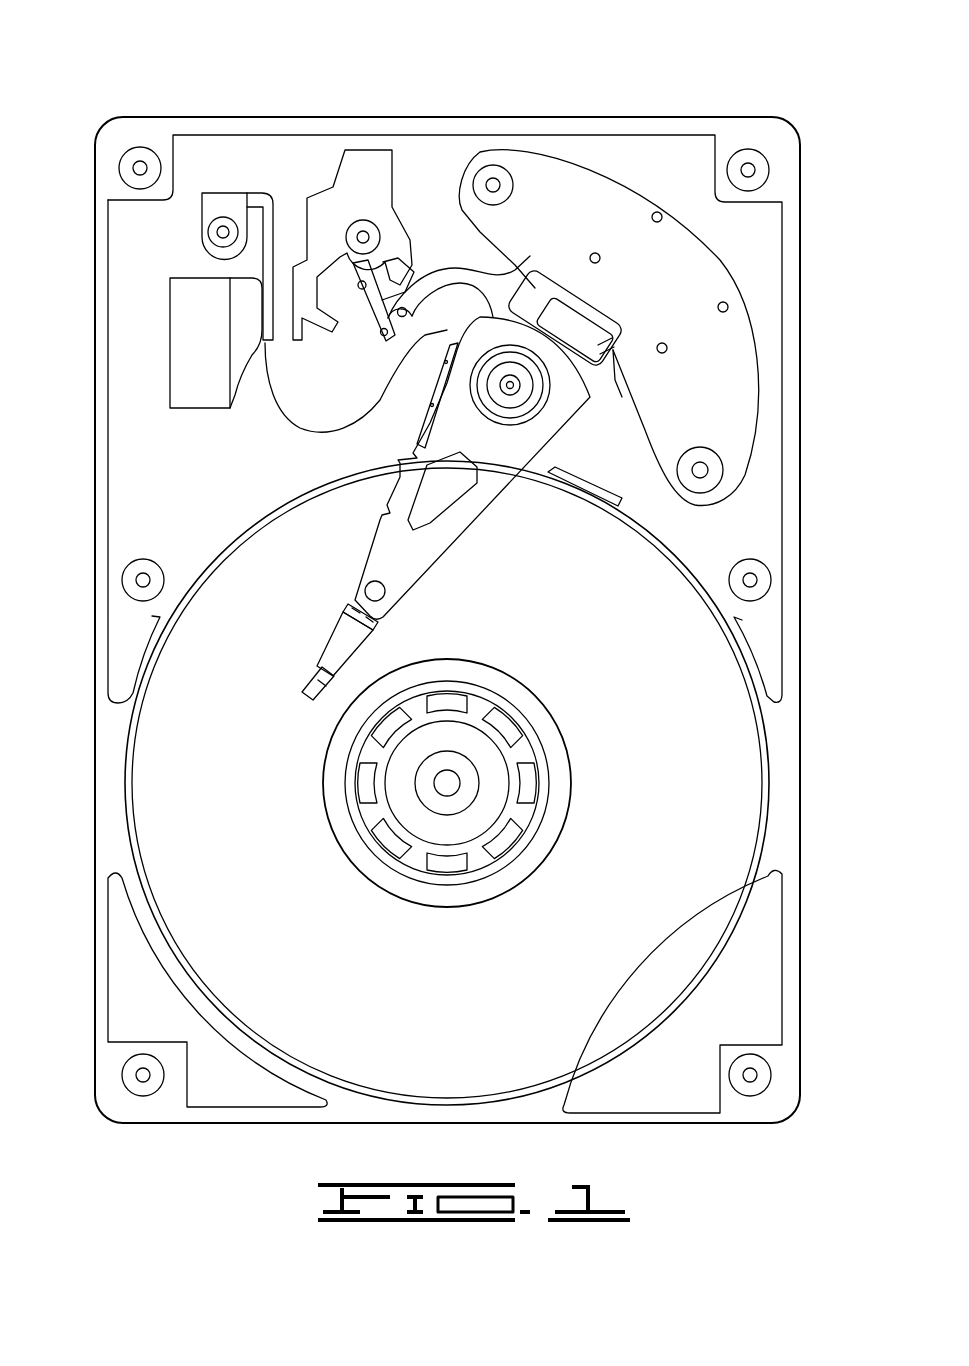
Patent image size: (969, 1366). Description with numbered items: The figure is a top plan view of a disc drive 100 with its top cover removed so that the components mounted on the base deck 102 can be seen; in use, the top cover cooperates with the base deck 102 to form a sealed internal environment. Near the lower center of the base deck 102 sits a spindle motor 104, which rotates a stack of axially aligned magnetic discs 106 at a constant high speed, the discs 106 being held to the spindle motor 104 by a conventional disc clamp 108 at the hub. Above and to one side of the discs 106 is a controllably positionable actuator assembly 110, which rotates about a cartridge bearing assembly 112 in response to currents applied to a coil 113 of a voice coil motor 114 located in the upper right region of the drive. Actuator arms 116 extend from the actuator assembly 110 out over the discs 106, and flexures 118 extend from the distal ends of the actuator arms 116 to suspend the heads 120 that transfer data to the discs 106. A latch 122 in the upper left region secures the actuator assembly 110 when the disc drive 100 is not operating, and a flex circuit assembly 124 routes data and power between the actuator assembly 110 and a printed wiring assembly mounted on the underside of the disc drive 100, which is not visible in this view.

The disc drive 100 is at (212, 97).
The base deck 102 is at (185, 473).
The spindle motor 104 is at (455, 812).
The magnetic discs 106 is at (690, 870).
The disc clamp 108 is at (345, 832).
The actuator assembly 110 is at (520, 400).
The cartridge bearing assembly 112 is at (487, 462).
The coil 113 is at (613, 343).
The voice coil motor 114 is at (547, 222).
The actuator arms 116 is at (390, 565).
The flexures 118 is at (332, 648).
The heads 120 is at (310, 682).
The latch 122 is at (362, 170).
The flex circuit assembly 124 is at (305, 437).